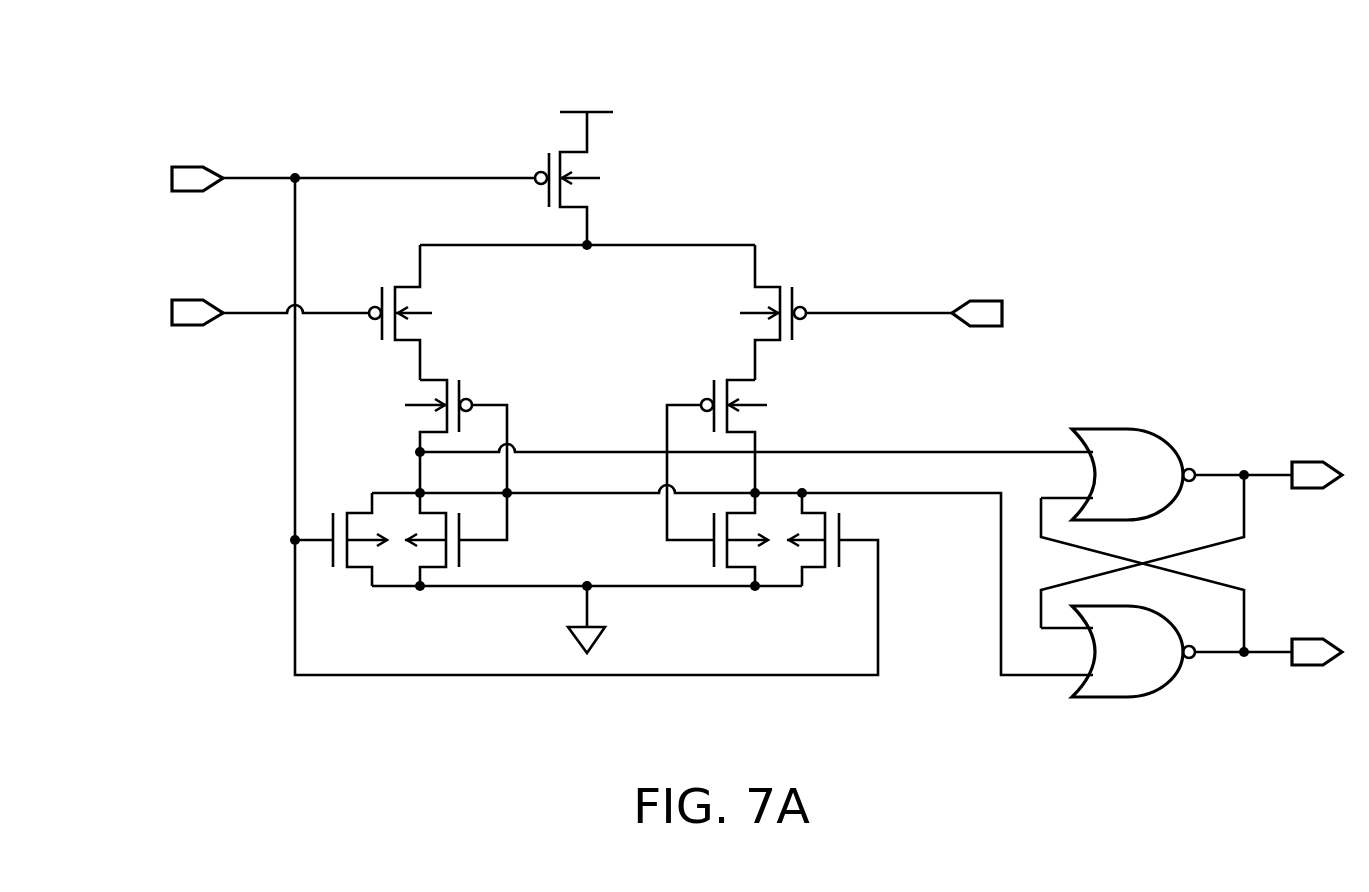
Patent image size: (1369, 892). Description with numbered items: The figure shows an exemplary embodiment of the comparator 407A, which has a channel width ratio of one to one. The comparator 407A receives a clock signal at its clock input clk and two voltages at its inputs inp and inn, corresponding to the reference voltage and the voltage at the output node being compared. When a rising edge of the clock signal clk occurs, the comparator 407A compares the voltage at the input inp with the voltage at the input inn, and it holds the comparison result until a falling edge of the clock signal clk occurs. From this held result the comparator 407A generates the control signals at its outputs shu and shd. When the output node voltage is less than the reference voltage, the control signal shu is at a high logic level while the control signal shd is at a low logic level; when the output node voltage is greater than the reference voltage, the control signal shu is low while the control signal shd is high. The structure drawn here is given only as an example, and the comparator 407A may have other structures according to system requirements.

The comparator 407A is at (1172, 134).
The clock signal clk is at (172, 178).
The positive input inp is at (172, 313).
The negative input inn is at (1005, 316).
The control signal SHU shu is at (1314, 462).
The control signal SHD shd is at (1316, 665).